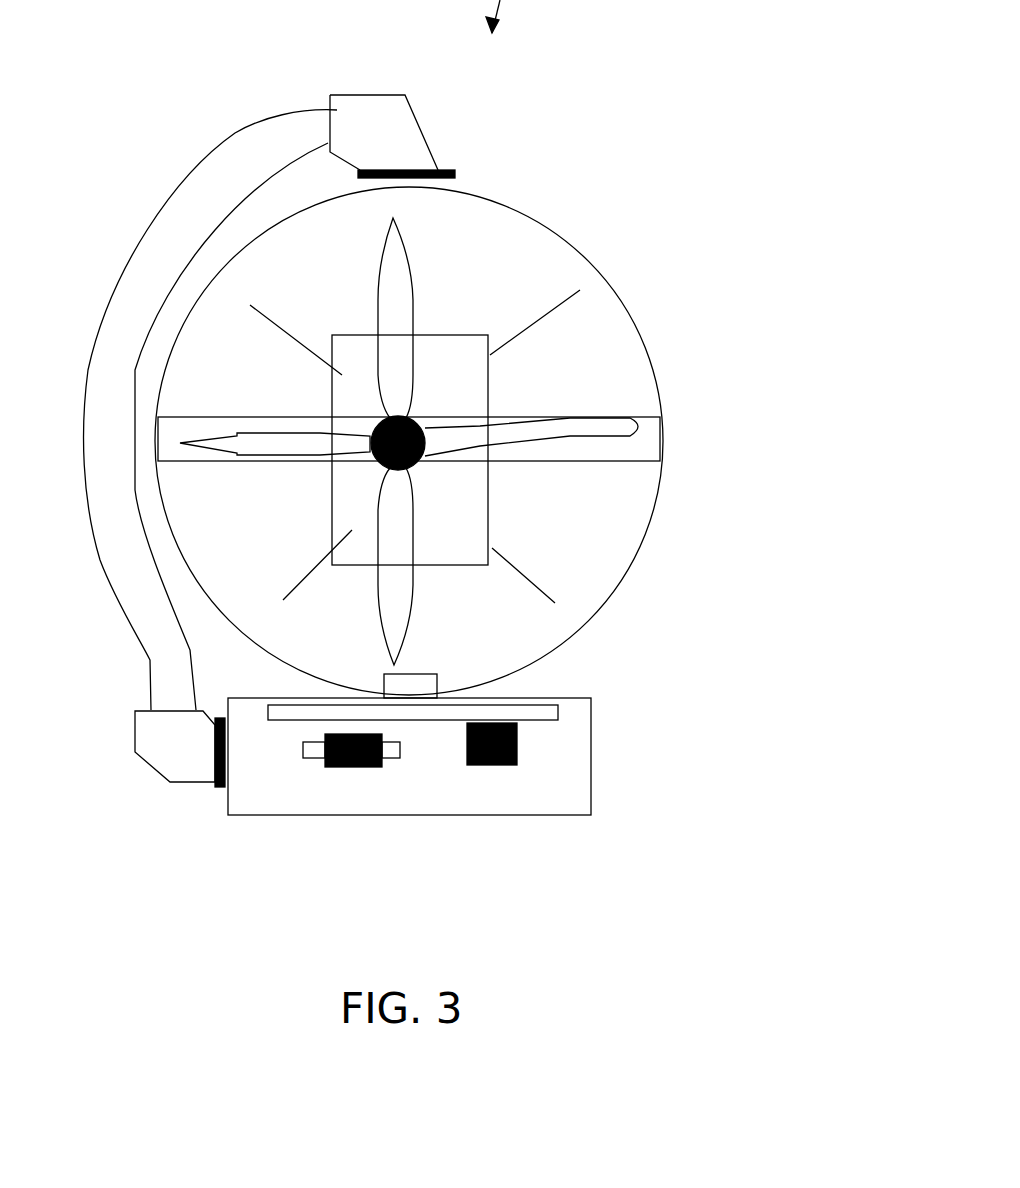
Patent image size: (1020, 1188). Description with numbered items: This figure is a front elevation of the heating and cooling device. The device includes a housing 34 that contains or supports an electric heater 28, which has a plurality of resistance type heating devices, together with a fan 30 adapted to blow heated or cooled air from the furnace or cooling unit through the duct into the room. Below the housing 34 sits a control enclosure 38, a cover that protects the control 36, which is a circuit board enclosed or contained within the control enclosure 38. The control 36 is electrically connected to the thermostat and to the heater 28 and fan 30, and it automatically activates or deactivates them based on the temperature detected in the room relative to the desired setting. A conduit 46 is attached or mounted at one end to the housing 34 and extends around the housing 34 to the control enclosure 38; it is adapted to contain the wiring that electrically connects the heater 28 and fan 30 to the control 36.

The electric heater assembly 28 is at (490, 380).
The fan 30 is at (625, 445).
The housing 34 is at (575, 245).
The control 36 is at (548, 722).
The control enclosure 38 is at (570, 815).
The conduit 46 is at (235, 135).